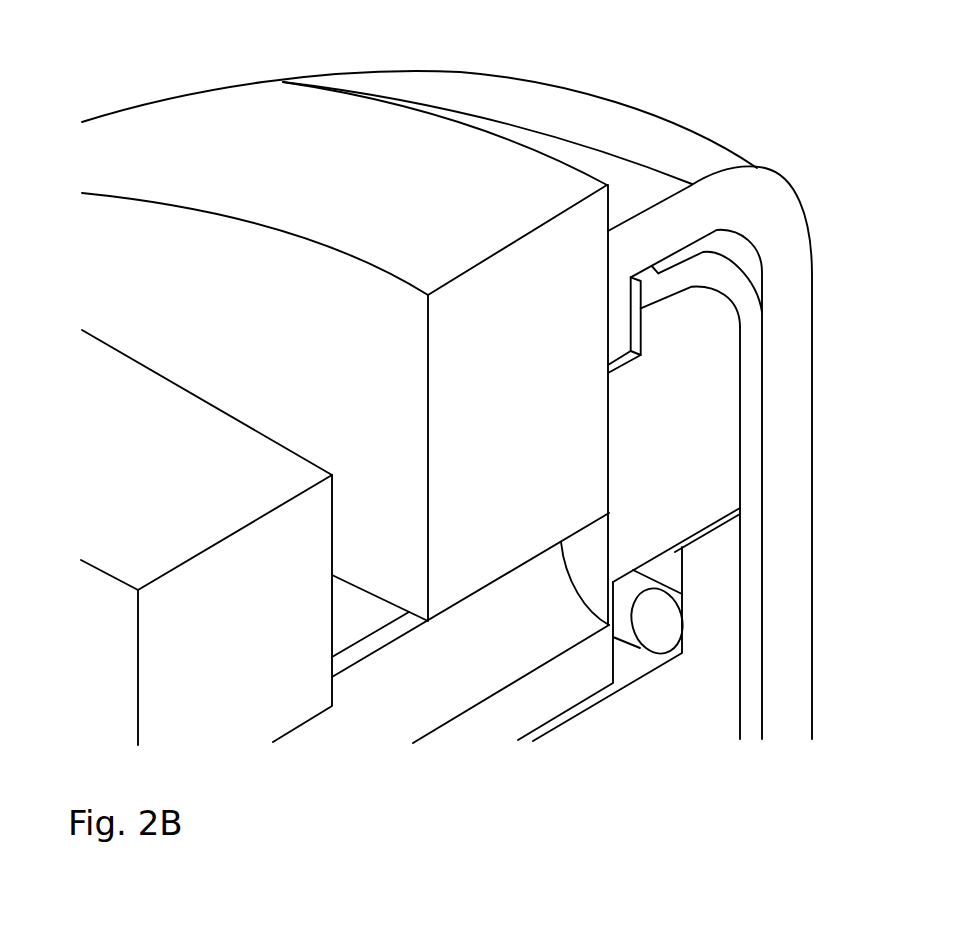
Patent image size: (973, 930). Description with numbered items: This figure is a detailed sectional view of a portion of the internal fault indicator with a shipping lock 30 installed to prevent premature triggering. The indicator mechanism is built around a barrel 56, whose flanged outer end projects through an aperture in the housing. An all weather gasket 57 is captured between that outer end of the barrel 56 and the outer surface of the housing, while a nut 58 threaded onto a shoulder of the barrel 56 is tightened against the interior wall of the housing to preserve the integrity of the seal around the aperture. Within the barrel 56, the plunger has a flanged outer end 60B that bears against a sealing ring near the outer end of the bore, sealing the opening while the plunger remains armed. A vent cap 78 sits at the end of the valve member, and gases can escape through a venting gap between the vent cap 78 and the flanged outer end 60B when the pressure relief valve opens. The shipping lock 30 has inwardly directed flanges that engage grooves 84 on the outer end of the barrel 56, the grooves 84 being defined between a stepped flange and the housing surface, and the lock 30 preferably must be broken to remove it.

The all weather gasket 57 is at (535, 293).
The nut 58 is at (237, 689).
The vent cap 78 is at (723, 283).
The grooves 84 is at (643, 354).
The barrel 56 is at (734, 476).
The shipping lock 30 is at (782, 608).
The flanged outer end 60B is at (712, 641).